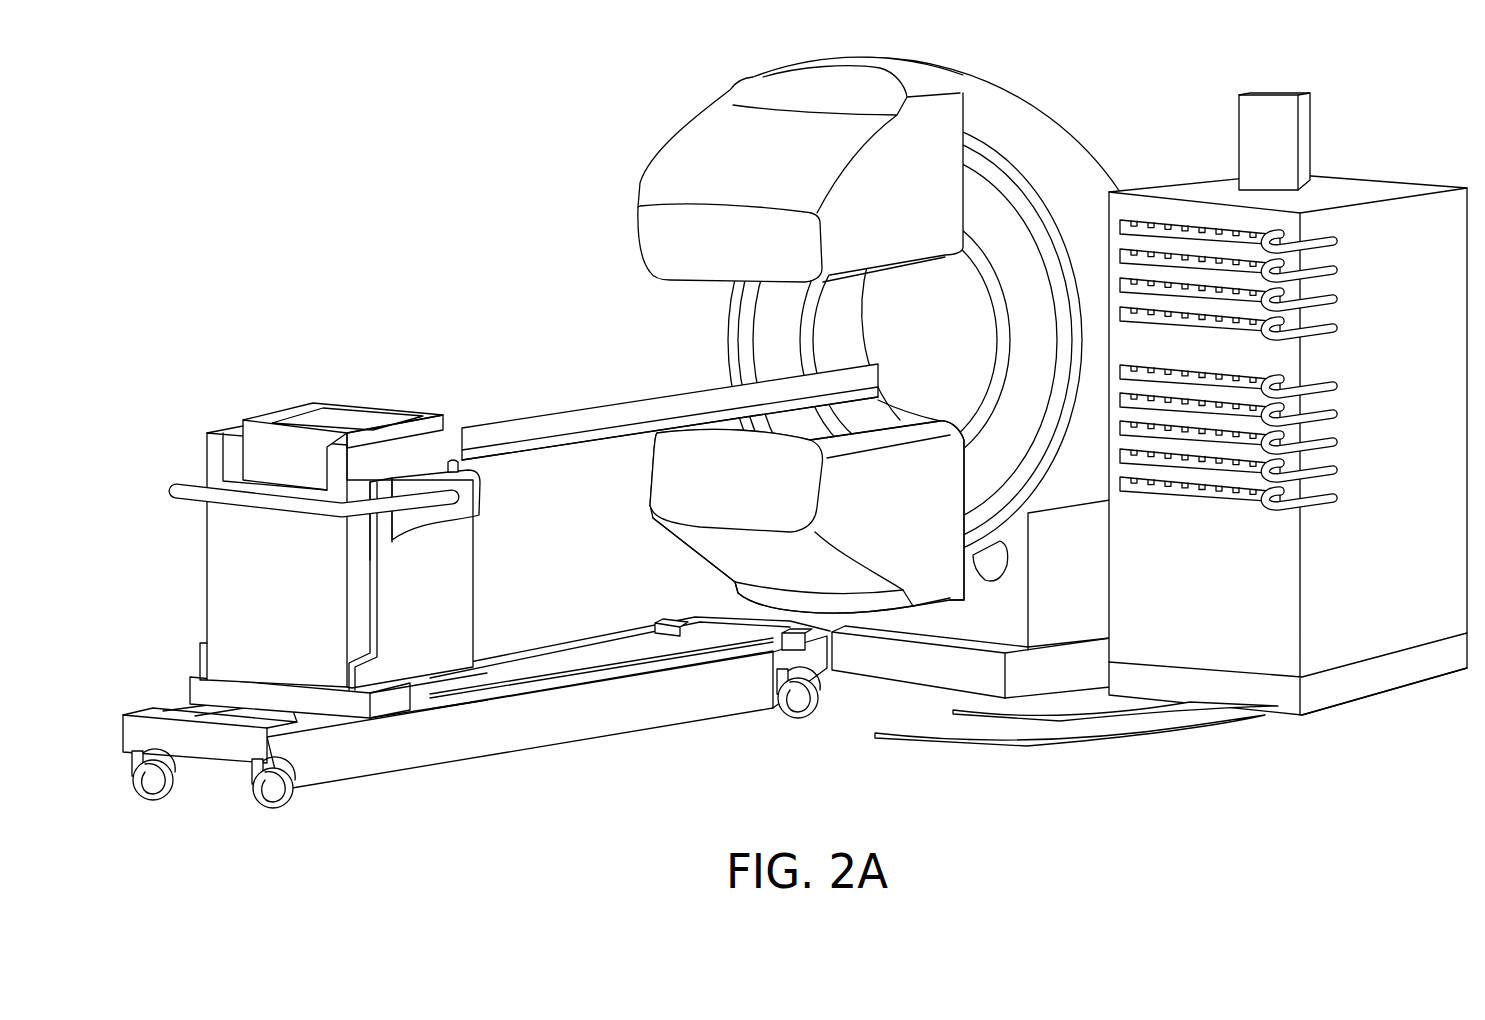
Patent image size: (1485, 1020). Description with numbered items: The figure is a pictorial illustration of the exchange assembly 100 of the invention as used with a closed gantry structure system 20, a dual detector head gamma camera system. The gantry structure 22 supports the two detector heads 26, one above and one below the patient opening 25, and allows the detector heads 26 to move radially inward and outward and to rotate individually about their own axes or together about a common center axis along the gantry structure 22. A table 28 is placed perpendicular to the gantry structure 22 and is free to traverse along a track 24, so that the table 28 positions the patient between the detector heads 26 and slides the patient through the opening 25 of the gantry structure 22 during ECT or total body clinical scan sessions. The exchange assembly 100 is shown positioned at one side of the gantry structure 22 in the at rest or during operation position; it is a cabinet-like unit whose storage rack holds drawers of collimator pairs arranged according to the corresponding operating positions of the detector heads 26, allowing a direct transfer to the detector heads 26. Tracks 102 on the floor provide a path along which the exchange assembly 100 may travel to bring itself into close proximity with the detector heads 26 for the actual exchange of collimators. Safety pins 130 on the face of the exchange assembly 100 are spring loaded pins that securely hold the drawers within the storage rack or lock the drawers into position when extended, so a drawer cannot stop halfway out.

The closed gantry structure system 20 is at (435, 170).
The gantry structure 22 is at (1033, 125).
The track 24 is at (660, 712).
The opening 25 is at (951, 345).
The detector heads 26 is at (637, 242).
The table 28 is at (595, 418).
The exchange assembly 100 is at (1288, 404).
The tracks 102 is at (1090, 745).
The safety pins 130 is at (1323, 333).